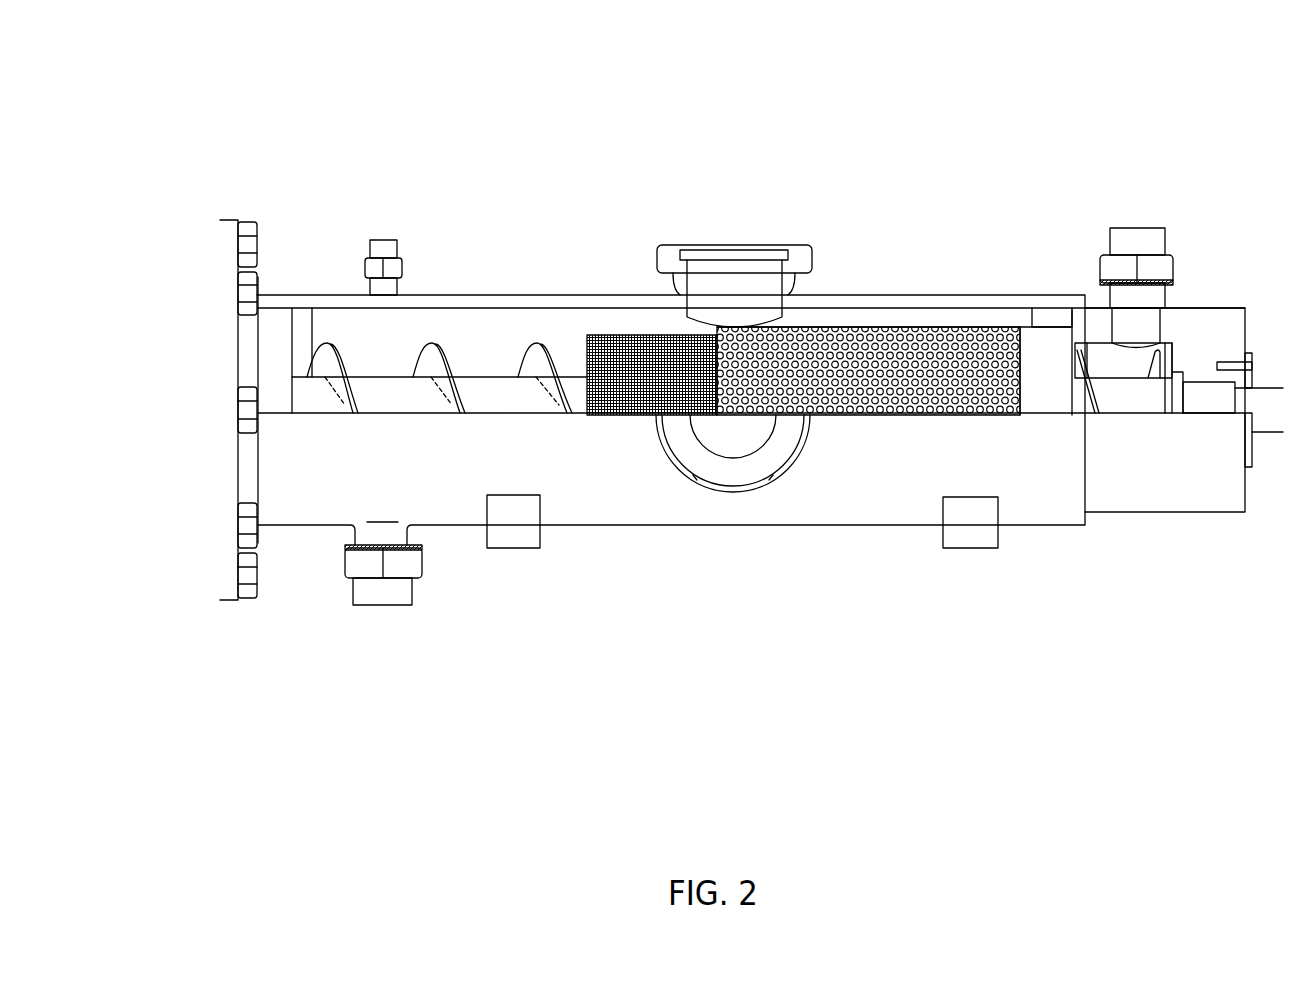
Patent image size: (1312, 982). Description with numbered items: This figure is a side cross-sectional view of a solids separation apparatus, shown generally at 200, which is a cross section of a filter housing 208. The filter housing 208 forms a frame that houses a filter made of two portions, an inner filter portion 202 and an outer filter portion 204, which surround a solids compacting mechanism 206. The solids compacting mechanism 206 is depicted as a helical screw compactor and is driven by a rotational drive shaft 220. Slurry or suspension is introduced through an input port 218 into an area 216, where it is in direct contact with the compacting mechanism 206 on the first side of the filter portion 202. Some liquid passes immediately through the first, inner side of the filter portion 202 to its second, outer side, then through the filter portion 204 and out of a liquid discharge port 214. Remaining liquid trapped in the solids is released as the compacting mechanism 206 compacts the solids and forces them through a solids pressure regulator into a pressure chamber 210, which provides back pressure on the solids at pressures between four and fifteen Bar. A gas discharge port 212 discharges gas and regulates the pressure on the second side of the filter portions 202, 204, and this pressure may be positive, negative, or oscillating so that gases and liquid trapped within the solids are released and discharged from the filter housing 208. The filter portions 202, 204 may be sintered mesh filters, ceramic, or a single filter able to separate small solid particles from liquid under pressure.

The solids separation apparatus 200 is at (230, 78).
The filter portion 202 is at (622, 337).
The filter portion 204 is at (888, 335).
The solids compacting mechanism 206 is at (478, 388).
The filter housing 208 is at (338, 305).
The pressure chamber 210 is at (208, 398).
The gas discharge port 212 is at (387, 240).
The liquid discharge port 214 is at (367, 600).
The area 216 is at (1103, 353).
The input port 218 is at (1132, 242).
The rotational drive shaft 220 is at (1267, 397).